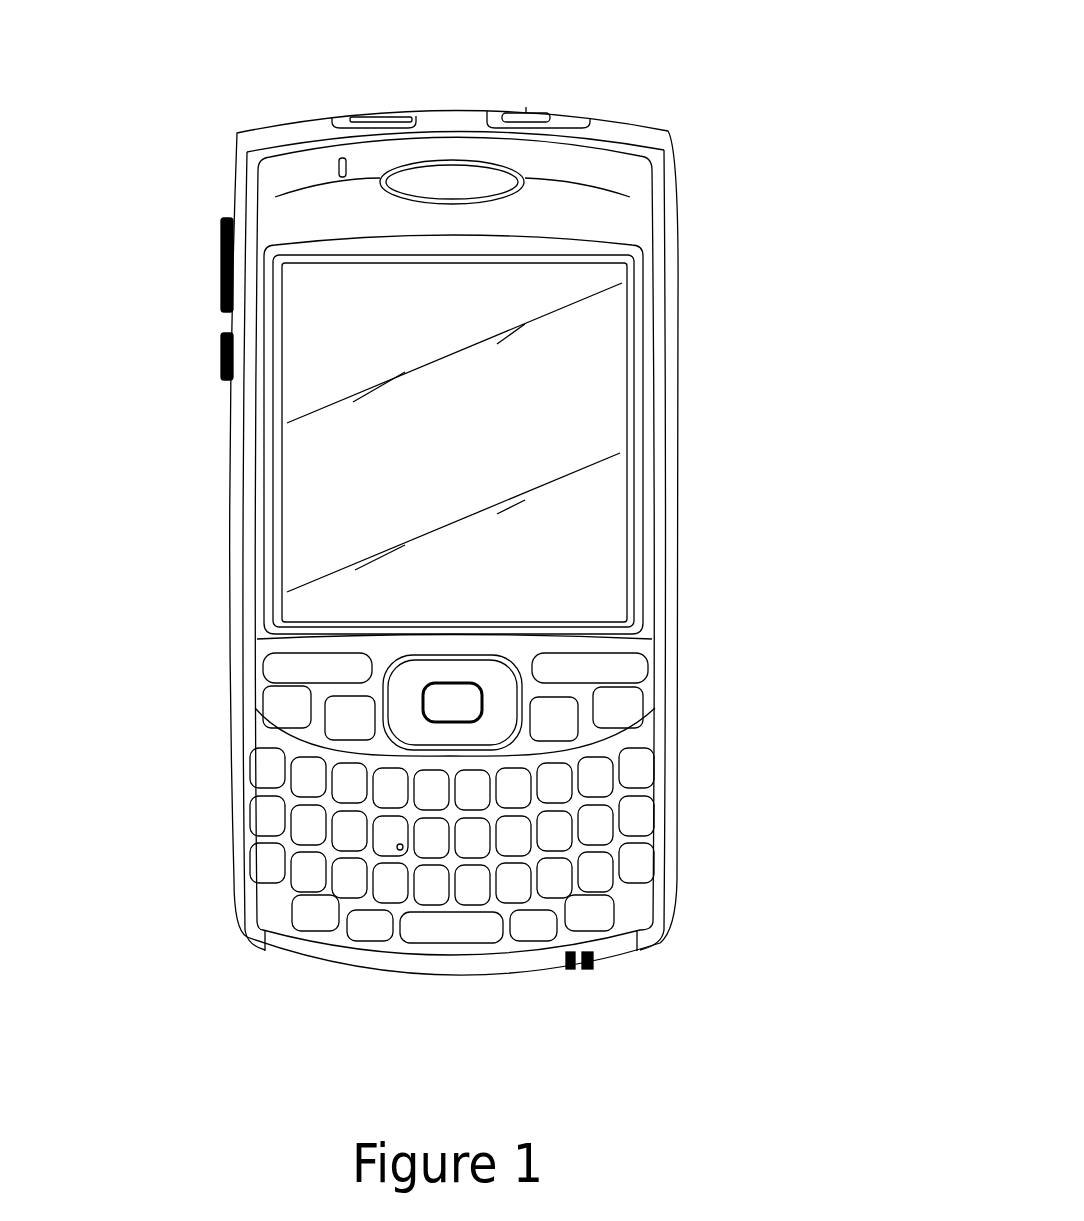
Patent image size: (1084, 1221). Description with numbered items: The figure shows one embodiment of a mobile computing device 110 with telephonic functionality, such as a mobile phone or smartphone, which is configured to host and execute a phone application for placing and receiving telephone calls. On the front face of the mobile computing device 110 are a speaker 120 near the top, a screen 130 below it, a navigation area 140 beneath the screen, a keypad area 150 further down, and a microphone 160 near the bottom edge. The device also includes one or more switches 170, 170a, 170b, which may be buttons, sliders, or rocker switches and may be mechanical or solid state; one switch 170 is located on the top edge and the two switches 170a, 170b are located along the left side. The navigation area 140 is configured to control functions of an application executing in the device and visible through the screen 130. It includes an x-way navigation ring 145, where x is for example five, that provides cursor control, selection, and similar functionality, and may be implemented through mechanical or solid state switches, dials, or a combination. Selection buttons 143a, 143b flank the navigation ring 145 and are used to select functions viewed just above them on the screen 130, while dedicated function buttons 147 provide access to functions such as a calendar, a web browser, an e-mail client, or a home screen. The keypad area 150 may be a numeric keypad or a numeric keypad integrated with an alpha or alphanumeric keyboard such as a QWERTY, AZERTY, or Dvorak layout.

The mobile computing device 110 is at (672, 135).
The speaker 120 is at (450, 175).
The screen 130 is at (595, 402).
The navigation area 140 is at (479, 663).
The selection button 143a is at (285, 662).
The selection button 143b is at (605, 667).
The navigation ring 145 is at (493, 683).
The dedicated function buttons 147 is at (348, 720).
The keypad area 150 is at (688, 752).
The microphone 160 is at (585, 978).
The switch 170 is at (533, 110).
The switch 170a is at (219, 253).
The switch 170b is at (220, 355).